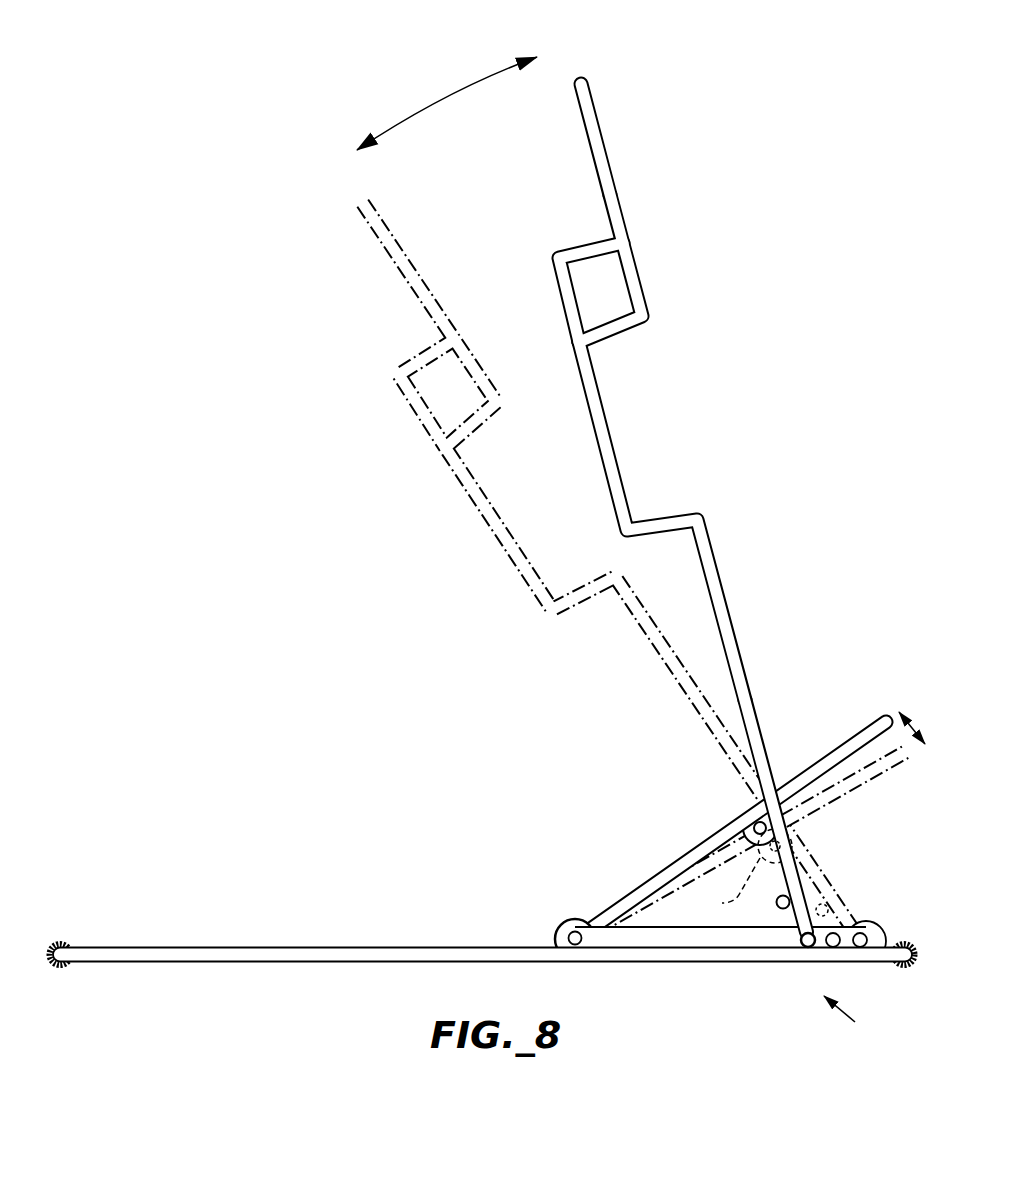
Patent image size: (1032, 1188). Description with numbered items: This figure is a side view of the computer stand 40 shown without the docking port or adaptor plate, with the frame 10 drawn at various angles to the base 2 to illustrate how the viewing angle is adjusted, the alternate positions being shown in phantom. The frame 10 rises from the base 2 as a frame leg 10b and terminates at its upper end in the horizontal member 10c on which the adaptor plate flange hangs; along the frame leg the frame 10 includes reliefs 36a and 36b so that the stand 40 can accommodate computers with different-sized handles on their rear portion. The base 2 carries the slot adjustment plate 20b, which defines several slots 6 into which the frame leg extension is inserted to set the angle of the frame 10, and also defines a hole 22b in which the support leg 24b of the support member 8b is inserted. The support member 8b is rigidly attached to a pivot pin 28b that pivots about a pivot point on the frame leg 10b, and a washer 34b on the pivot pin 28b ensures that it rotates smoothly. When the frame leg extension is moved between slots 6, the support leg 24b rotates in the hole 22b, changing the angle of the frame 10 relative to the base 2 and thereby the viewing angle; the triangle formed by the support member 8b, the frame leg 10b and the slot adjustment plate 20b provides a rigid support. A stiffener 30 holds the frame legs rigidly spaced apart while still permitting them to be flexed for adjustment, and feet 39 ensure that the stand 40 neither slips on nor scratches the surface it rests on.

The base 2 is at (203, 947).
The slots 6 is at (862, 947).
The support member 8b is at (837, 755).
The frame 10 is at (652, 485).
The frame leg 10b is at (740, 712).
The horizontal member 10c is at (581, 75).
The slot adjustment plate 20b is at (733, 937).
The hole 22b is at (572, 920).
The support leg 24b is at (578, 946).
The pivot pin 28b is at (721, 890).
The stiffener 30 is at (790, 900).
The washer 34b is at (752, 810).
The relief 36a is at (641, 297).
The relief 36b is at (578, 233).
The feet 39 is at (62, 942).
The computer stand 40 is at (854, 1020).